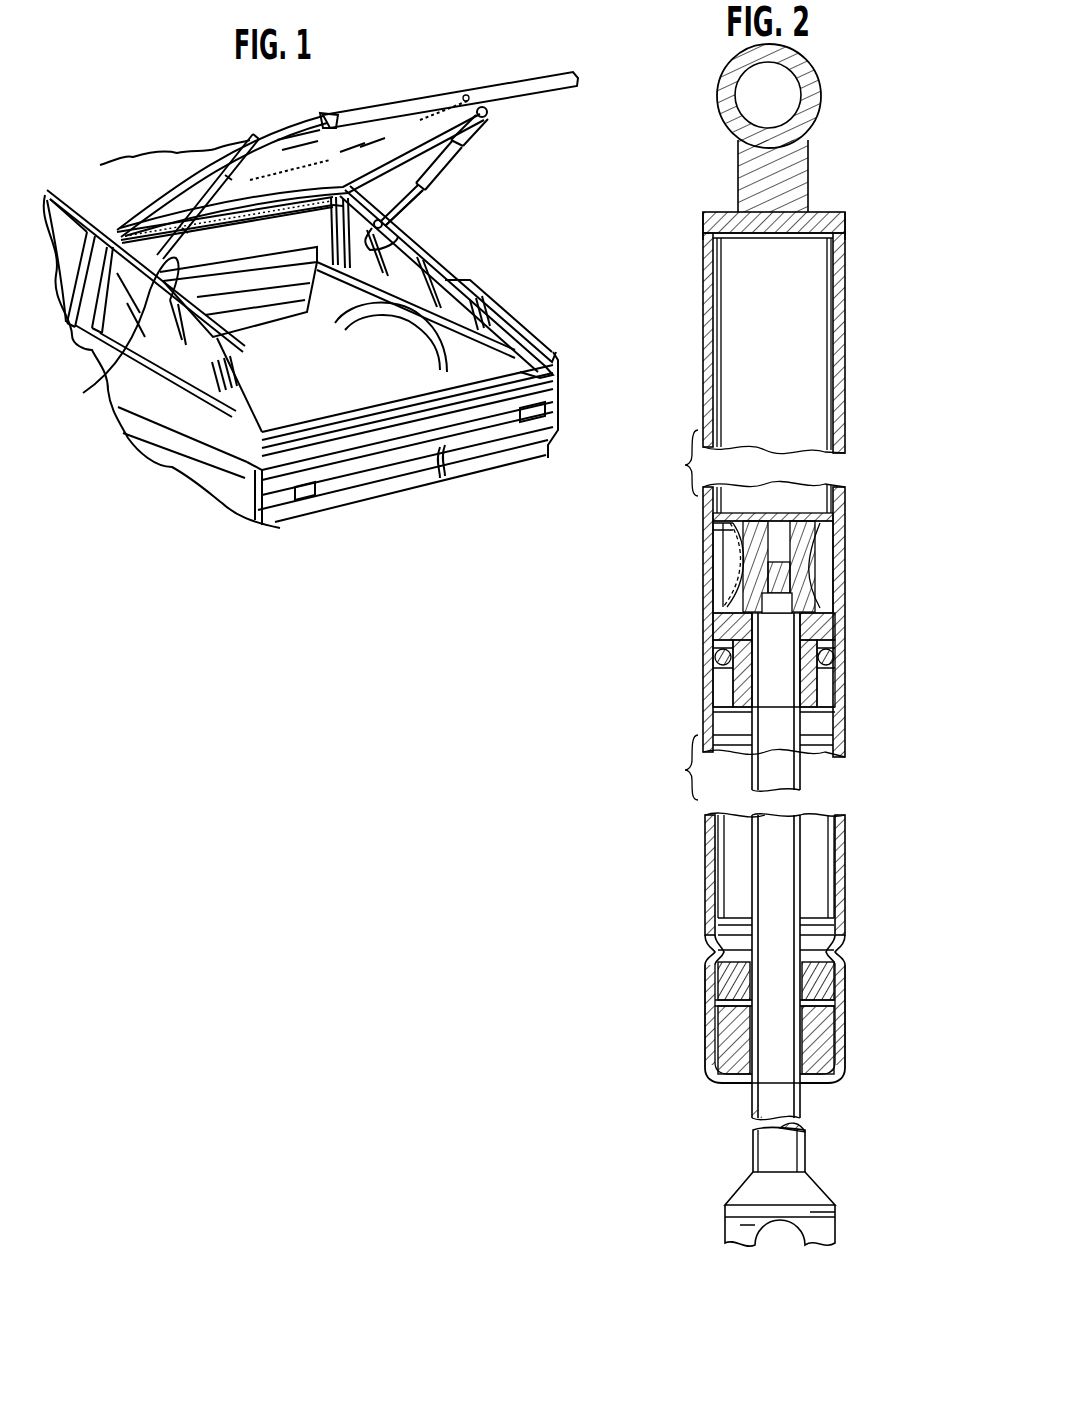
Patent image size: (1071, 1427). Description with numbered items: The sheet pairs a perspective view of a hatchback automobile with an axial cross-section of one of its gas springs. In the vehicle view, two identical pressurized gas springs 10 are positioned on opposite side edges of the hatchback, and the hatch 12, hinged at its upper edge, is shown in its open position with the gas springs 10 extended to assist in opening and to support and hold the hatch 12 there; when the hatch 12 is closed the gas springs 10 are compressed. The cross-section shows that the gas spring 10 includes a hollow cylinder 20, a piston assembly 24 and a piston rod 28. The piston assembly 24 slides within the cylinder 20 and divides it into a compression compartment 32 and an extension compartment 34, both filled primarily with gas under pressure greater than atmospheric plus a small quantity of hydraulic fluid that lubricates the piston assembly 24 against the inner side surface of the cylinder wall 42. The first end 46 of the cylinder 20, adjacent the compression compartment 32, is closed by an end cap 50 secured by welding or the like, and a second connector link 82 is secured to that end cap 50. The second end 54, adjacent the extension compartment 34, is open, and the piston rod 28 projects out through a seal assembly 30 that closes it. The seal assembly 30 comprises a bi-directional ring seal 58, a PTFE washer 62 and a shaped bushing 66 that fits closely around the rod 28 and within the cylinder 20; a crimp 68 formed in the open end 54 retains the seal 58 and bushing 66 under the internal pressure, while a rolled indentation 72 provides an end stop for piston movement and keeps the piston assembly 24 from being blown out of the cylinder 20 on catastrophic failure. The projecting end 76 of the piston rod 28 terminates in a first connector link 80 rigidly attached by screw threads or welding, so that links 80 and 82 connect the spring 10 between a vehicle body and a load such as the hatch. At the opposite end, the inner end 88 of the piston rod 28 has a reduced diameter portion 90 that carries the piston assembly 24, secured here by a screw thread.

In FIG. 1, the gas spring 10 is at (187, 187).
In FIG. 2, the gas spring 10 is at (628, 780).
In FIG. 1, the hatch 12 is at (407, 98).
In FIG. 2, the cylinder 20 is at (655, 463).
In FIG. 2, the piston assembly 24 is at (678, 548).
In FIG. 1, the piston rod 28 is at (410, 195).
In FIG. 2, the piston rod 28 is at (800, 787).
In FIG. 2, the seal assembly 30 is at (858, 1000).
In FIG. 2, the compression compartment 32 is at (742, 293).
In FIG. 2, the extension compartment 34 is at (742, 858).
In FIG. 2, the cylinder wall 42 is at (845, 340).
In FIG. 2, the first end 46 is at (845, 200).
In FIG. 2, the end cap 50 is at (705, 210).
In FIG. 2, the second end 54 is at (700, 1090).
In FIG. 2, the bi-directional ring seal 58 is at (718, 972).
In FIG. 2, the washer 62 is at (720, 1003).
In FIG. 2, the shaped bushing 66 is at (718, 1040).
In FIG. 2, the crimp 68 is at (815, 1085).
In FIG. 2, the rolled indentation 72 is at (848, 945).
In FIG. 2, the projecting end 76 is at (765, 1152).
In FIG. 1, the first connector link 80 is at (420, 232).
In FIG. 2, the first connector link 80 is at (725, 1205).
In FIG. 1, the second connector link 82 is at (488, 112).
In FIG. 2, the second connector link 82 is at (824, 108).
In FIG. 2, the inner end 88 is at (772, 740).
In FIG. 2, the reduced diameter portion 90 is at (768, 690).